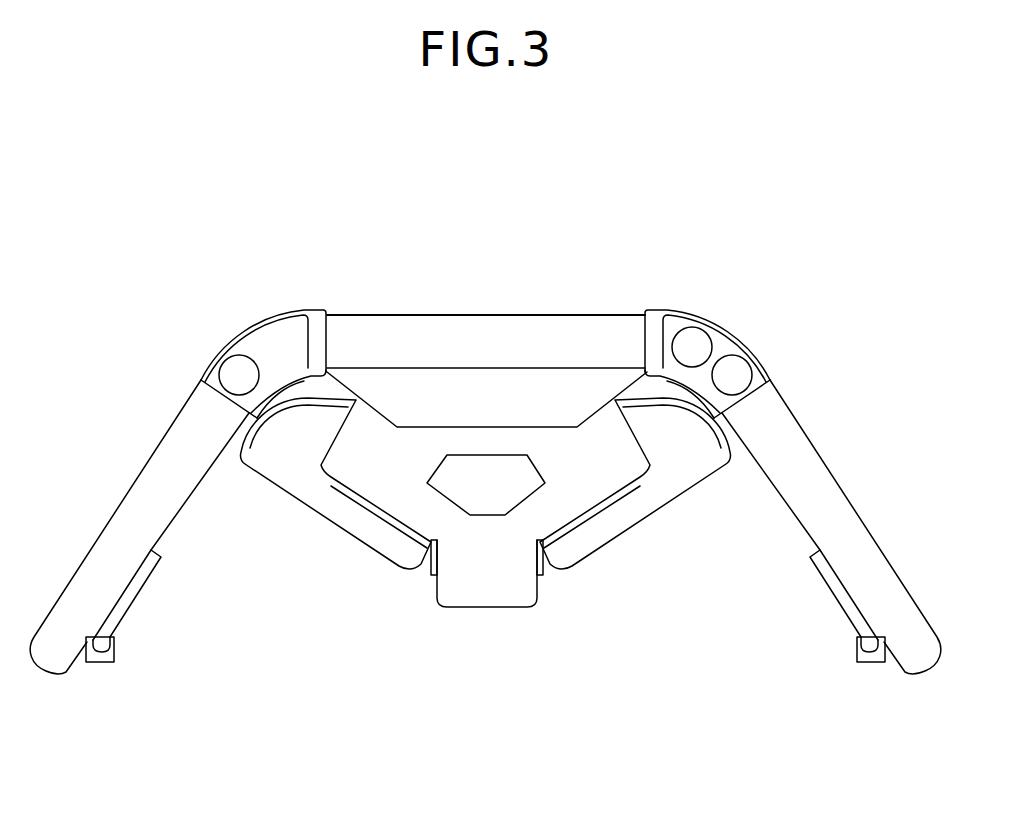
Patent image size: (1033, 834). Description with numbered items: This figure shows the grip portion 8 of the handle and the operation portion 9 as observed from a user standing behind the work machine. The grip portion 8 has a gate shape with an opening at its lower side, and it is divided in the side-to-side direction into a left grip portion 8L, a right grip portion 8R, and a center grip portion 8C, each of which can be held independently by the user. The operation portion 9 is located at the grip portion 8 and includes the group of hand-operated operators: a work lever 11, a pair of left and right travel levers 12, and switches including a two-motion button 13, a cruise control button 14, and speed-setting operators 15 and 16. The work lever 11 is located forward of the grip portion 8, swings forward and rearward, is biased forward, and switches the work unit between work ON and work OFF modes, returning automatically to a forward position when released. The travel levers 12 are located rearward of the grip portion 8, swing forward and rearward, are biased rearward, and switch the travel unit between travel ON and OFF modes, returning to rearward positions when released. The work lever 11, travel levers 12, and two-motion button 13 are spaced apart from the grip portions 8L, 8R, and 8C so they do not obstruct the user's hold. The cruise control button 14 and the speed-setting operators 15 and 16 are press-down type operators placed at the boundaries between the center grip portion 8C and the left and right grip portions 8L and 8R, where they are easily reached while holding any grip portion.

The grip portion 8 is at (372, 316).
The center grip portion 8C is at (474, 332).
The left grip portion 8L is at (150, 482).
The right grip portion 8R is at (820, 480).
The operation portion 9 is at (305, 648).
The work lever 11 is at (845, 617).
The travel levers 12 is at (270, 465).
The two-motion button 13 is at (513, 483).
The cruise control button 14 is at (693, 343).
The speed-setting operator 15 is at (733, 368).
The speed-setting operator 16 is at (238, 367).